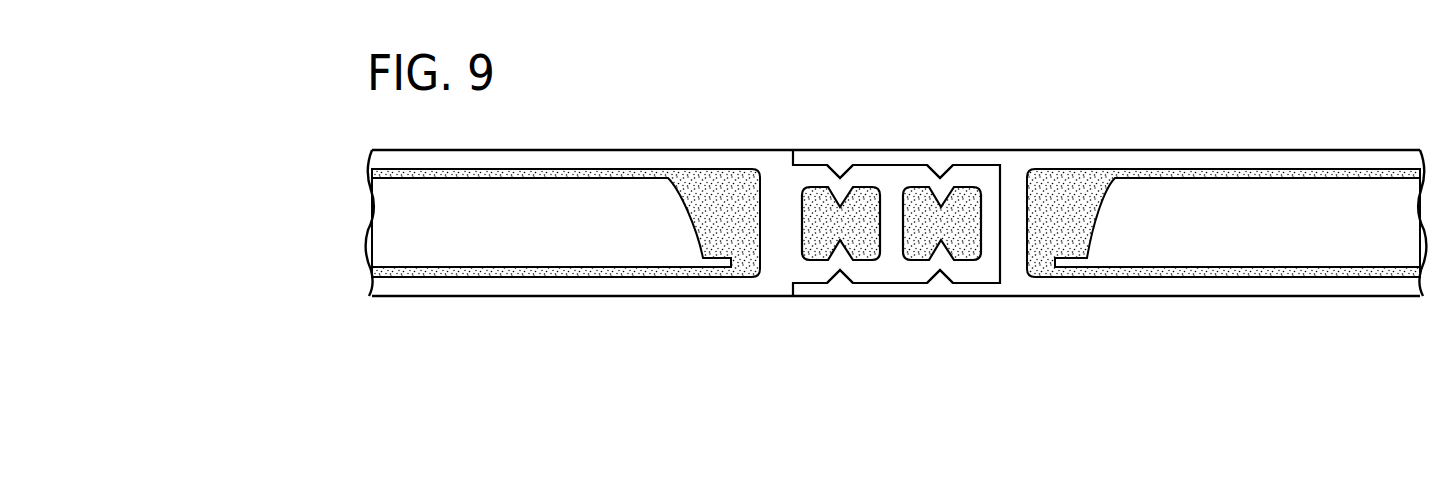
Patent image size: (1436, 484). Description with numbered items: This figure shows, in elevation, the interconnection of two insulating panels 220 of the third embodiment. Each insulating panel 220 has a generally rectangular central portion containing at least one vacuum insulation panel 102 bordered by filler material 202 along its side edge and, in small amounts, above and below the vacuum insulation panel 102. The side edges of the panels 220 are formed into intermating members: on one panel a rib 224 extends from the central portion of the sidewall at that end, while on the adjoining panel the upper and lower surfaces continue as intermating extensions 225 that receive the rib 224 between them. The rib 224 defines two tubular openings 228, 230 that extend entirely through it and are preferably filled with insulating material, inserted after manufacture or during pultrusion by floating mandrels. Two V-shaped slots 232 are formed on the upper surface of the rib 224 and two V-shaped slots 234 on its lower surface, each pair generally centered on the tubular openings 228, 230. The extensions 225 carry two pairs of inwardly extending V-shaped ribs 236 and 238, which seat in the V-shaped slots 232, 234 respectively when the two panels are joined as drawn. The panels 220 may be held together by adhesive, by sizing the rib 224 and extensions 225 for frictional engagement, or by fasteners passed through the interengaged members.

The vacuum insulation panel 102 is at (530, 238).
The filler material 202 is at (724, 193).
The insulating panel 220 is at (545, 312).
The rib 224 is at (891, 236).
The extensions 225 is at (895, 154).
The tubular opening 228 is at (823, 210).
The tubular opening 230 is at (918, 244).
The V-shaped slots 232 is at (944, 165).
The V-shaped slots 234 is at (937, 284).
The V-shaped ribs 236 is at (839, 168).
The V-shaped ribs 238 is at (842, 284).